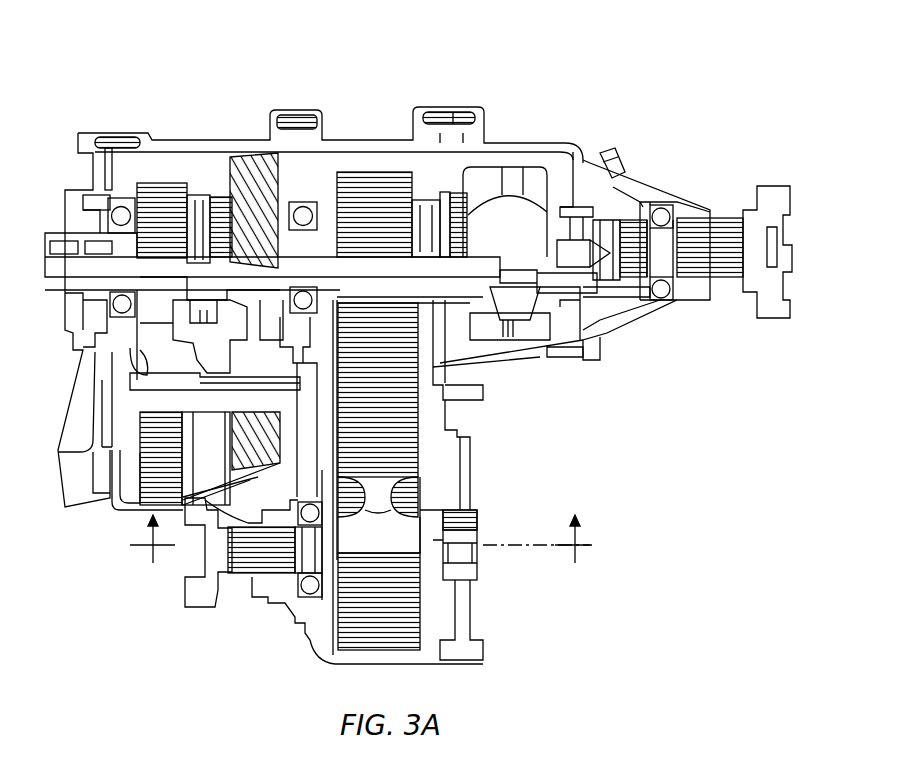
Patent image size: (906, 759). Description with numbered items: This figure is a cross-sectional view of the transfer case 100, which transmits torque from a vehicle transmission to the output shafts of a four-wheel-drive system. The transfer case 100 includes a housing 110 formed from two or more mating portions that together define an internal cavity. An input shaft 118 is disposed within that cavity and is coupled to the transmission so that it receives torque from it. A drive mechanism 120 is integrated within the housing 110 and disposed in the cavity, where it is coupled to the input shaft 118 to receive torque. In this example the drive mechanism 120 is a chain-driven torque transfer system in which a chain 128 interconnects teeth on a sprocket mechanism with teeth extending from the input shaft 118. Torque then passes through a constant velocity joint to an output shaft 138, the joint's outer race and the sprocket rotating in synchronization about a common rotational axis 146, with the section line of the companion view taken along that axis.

The transfer case 100 is at (712, 68).
The housing 110 is at (90, 131).
The input shaft 118 is at (772, 263).
The drive mechanism 120 is at (455, 192).
The chain 128 is at (420, 600).
The output shaft 138 is at (200, 557).
The rotational axis 146 is at (518, 547).